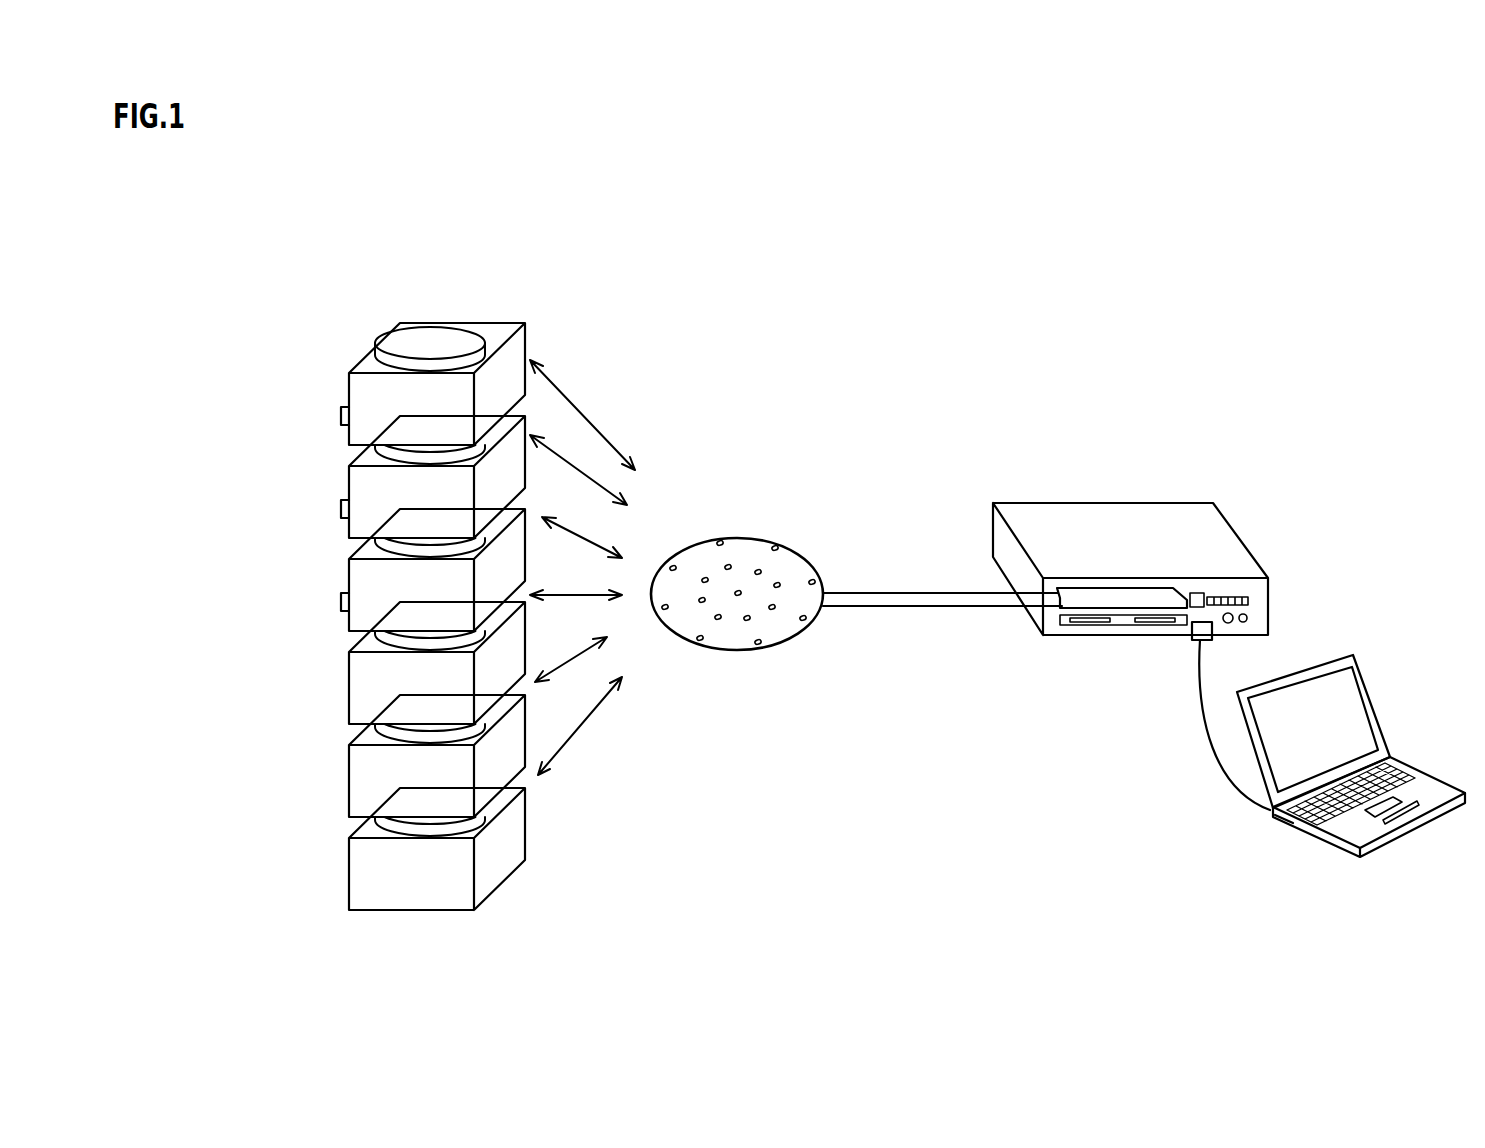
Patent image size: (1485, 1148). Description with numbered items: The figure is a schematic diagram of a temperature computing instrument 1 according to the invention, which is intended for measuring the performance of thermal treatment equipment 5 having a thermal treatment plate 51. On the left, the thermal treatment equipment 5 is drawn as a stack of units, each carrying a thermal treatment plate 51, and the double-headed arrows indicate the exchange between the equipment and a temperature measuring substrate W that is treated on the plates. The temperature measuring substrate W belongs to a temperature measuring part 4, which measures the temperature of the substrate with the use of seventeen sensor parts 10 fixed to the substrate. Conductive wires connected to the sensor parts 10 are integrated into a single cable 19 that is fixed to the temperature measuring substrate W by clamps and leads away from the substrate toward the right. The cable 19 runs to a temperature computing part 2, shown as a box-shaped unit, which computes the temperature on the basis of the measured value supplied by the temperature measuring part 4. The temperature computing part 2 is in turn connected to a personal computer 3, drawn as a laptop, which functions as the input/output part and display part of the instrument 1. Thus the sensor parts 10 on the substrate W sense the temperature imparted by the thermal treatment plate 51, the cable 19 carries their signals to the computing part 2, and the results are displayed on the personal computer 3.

The substrate processing system 1 is at (1074, 371).
The temperature computing part 2 is at (1220, 542).
The personal computer 3 is at (1365, 697).
The temperature measuring part 4 is at (856, 624).
The thermal treatment equipment 5 is at (489, 260).
The sensor parts 10 is at (775, 548).
The cable 19 is at (903, 602).
The thermal treatment plate 51 is at (413, 343).
The temperature measuring substrate W is at (688, 623).